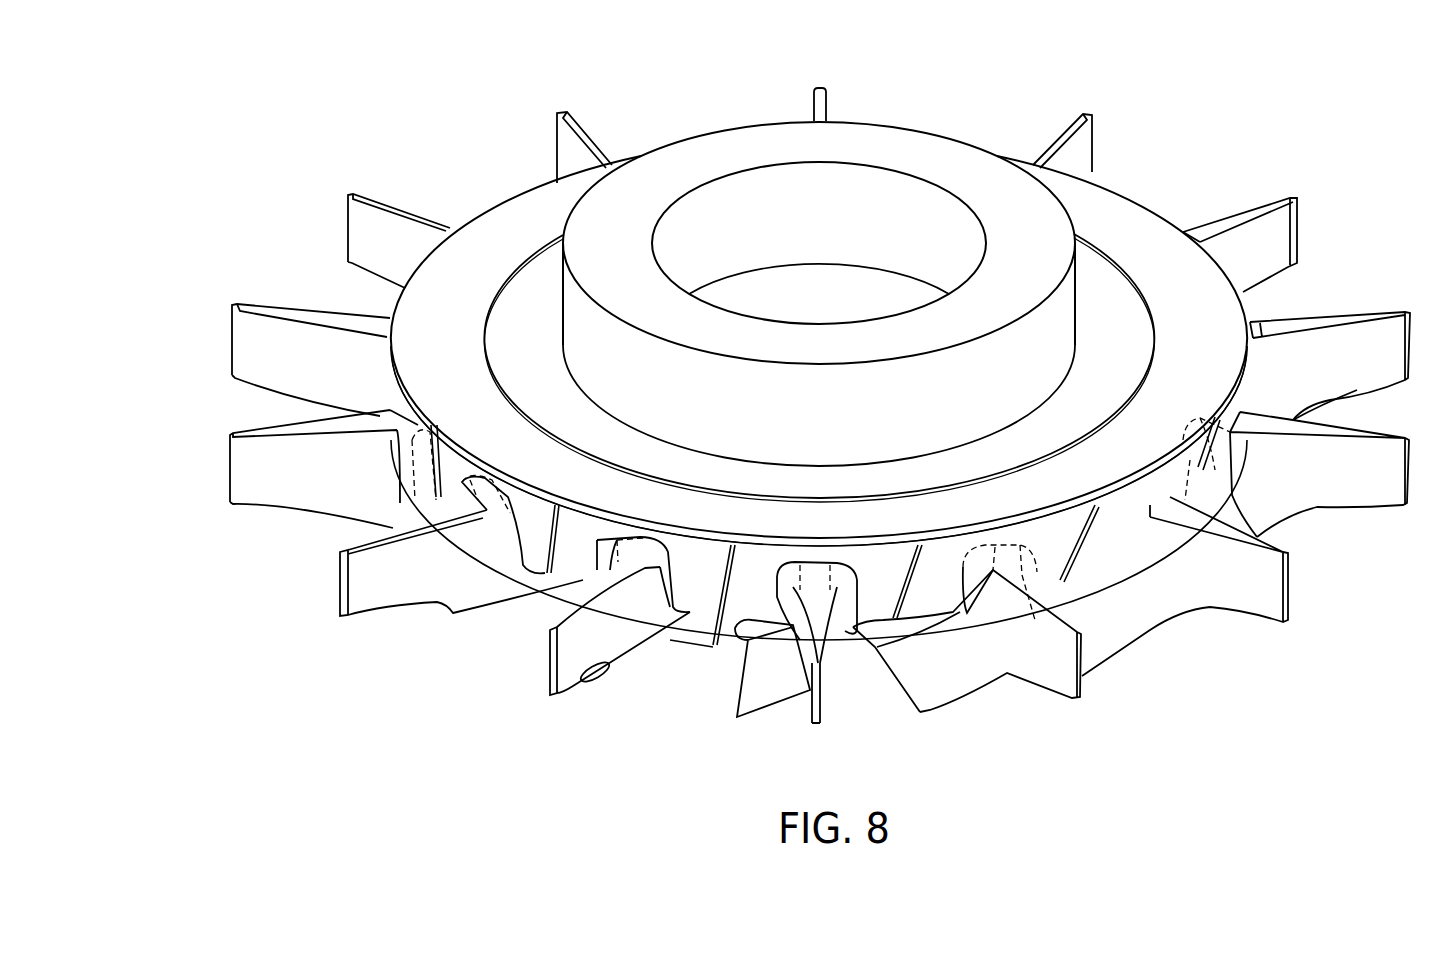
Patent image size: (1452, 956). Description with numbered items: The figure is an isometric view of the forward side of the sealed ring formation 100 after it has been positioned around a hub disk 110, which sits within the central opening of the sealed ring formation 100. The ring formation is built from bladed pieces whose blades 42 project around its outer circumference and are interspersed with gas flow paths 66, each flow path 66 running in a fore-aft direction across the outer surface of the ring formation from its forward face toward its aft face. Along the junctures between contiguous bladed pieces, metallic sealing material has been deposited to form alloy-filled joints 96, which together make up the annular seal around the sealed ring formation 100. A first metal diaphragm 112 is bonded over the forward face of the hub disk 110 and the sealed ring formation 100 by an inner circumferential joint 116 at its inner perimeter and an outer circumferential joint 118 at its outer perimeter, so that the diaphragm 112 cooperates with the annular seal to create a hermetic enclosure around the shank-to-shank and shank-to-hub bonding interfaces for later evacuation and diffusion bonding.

The sealed ring formation 100 is at (262, 138).
The hub disk 110 is at (893, 133).
The first metal diaphragm 112 is at (1150, 205).
The inner circumferential joint 116 is at (1155, 356).
The outer circumferential joint 118 is at (820, 540).
The blade 42 is at (814, 96).
The gas flow path 66 is at (422, 485).
The alloy-filled joint 96 is at (435, 425).